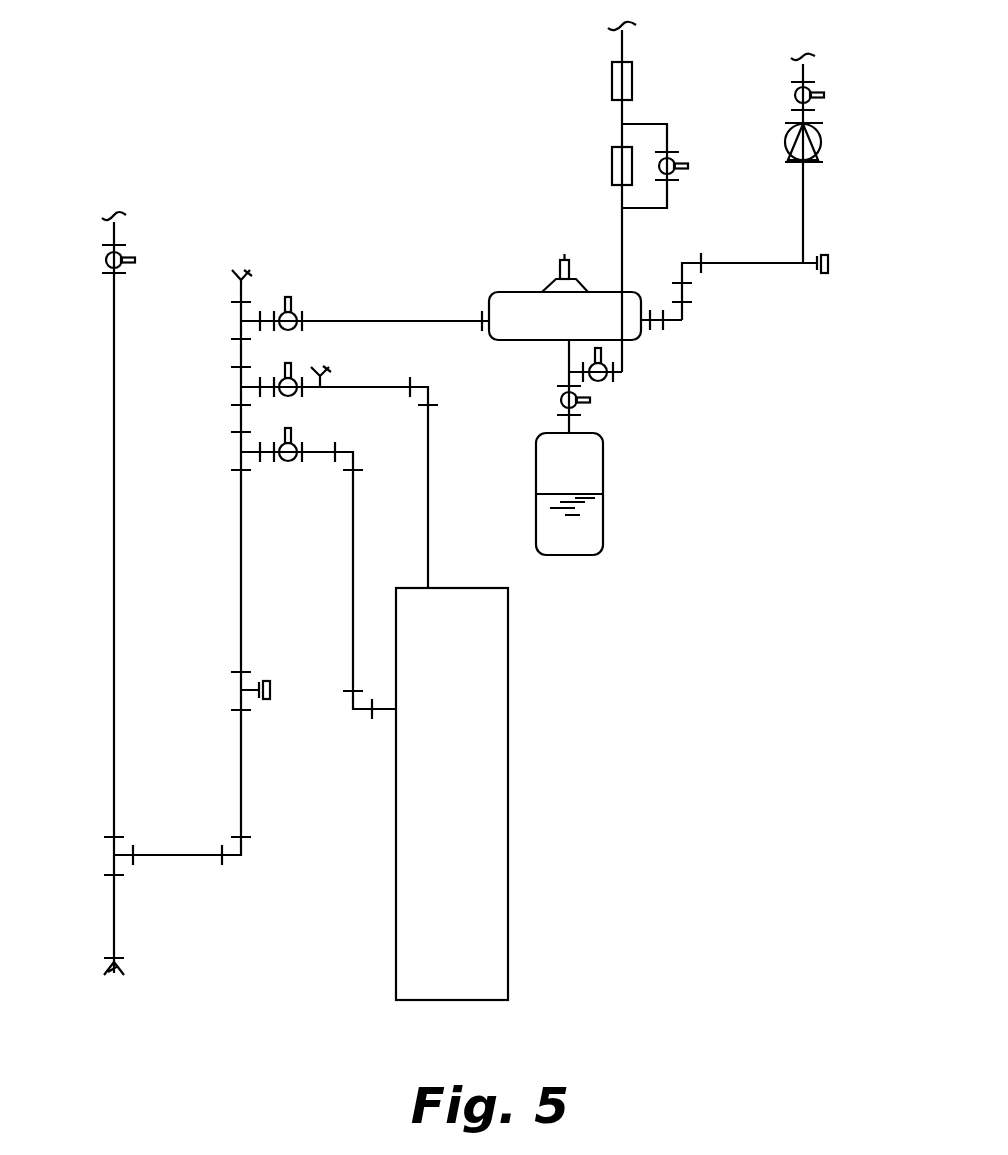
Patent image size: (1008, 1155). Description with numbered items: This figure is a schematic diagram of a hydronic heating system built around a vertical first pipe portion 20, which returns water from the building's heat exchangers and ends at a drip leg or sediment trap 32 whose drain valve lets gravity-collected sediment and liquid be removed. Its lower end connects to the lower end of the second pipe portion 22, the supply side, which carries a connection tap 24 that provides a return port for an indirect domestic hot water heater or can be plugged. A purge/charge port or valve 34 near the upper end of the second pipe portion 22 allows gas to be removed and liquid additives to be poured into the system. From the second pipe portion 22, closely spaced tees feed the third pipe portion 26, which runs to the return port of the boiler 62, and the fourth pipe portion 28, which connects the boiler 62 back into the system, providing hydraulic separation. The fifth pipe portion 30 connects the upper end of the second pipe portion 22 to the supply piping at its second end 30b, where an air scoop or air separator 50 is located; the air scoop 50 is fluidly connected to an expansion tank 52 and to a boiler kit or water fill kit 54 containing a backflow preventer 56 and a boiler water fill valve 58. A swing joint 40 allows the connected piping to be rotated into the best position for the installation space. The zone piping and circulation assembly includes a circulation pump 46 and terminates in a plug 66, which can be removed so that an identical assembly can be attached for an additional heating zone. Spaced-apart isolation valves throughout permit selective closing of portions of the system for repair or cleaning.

The first pipe portion 20 is at (114, 612).
The second pipe portion 22 is at (241, 795).
The connection tap 24 is at (272, 686).
The third pipe portion 26 is at (353, 540).
The fourth pipe portion 28 is at (428, 507).
The fifth pipe portion 30 is at (390, 320).
The second end of fifth pipe portion 30b is at (688, 262).
The drip leg or sediment trap 32 is at (119, 966).
The purge/charge port or valve 34 is at (250, 272).
The swing joint 40 is at (682, 322).
The circulation pump 46 is at (821, 140).
The air scoop or air separator 50 is at (522, 292).
The expansion tank 52 is at (603, 467).
The boiler kit or water fill kit 54 is at (605, 196).
The backflow preventer 56 is at (632, 80).
The boiler water fill valve 58 is at (612, 170).
The boiler 62 is at (508, 725).
The plug 66 is at (829, 262).